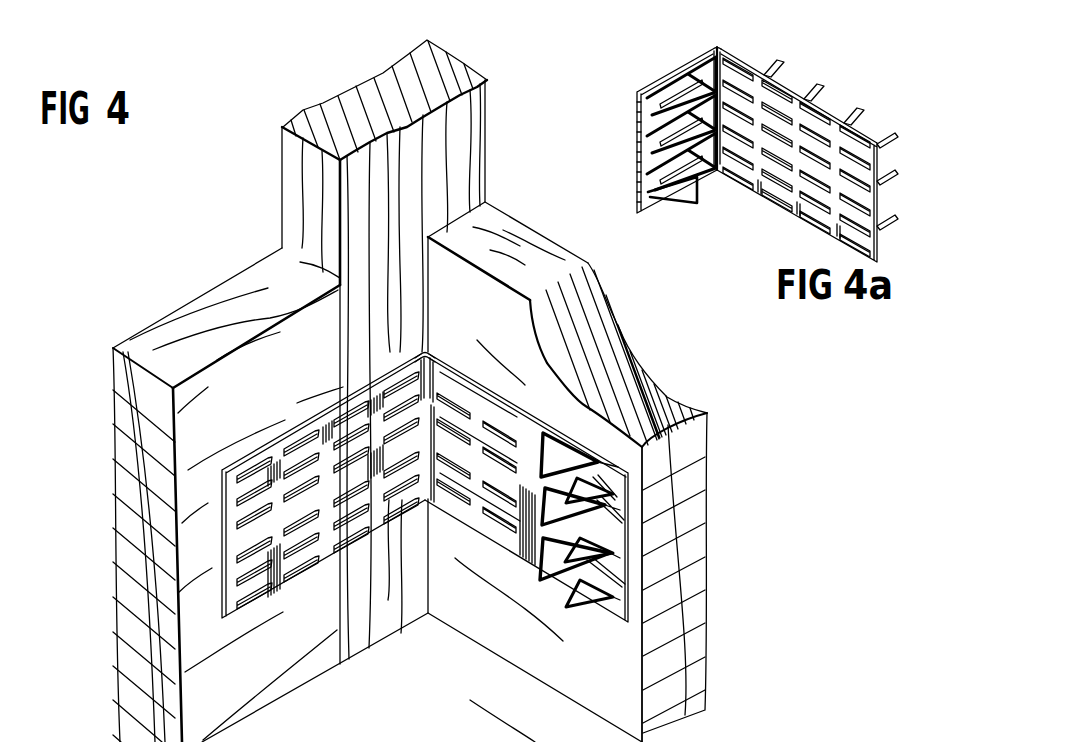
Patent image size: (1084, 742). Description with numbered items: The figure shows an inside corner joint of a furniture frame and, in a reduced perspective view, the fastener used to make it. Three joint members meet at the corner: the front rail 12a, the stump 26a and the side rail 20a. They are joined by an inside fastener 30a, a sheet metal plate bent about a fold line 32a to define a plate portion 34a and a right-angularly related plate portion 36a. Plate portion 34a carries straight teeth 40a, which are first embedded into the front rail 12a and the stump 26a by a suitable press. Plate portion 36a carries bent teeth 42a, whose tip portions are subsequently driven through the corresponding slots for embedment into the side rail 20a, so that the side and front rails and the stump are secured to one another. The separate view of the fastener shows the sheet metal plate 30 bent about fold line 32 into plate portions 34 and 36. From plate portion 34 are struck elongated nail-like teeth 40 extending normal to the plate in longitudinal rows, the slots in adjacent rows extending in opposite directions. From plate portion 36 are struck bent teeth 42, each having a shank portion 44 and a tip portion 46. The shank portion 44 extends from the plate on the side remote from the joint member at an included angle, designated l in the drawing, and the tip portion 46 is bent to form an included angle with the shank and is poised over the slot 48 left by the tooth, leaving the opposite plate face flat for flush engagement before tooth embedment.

In FIG. 4, the front rail 12a is at (248, 680).
In FIG. 4, the side rail 20a is at (478, 618).
In FIG. 4, the stump 26a is at (310, 183).
In FIG. 4, the inside fastener 30a is at (406, 487).
In FIG. 4, the fold line 32a is at (422, 372).
In FIG. 4, the plate portion 34a is at (305, 486).
In FIG. 4, the plate portion 36a is at (526, 498).
In FIG. 4, the straight teeth 40a is at (283, 517).
In FIG. 4, the bent teeth 42a is at (568, 606).
In FIG. 4A, the sheet metal plate 30 is at (740, 138).
In FIG. 4A, the fold line 32 is at (718, 48).
In FIG. 4A, the plate portion 34 is at (810, 155).
In FIG. 4A, the plate portion 36 is at (658, 150).
In FIG. 4A, the nail-like teeth 40 is at (858, 116).
In FIG. 4A, the bent teeth 42 is at (686, 204).
In FIG. 4A, the shank portion 44 is at (663, 202).
In FIG. 4A, the tip portion 46 is at (698, 187).
In FIG. 4A, the slot 48 is at (655, 195).
In FIG. 4A, the prong length dimension l is at (660, 188).